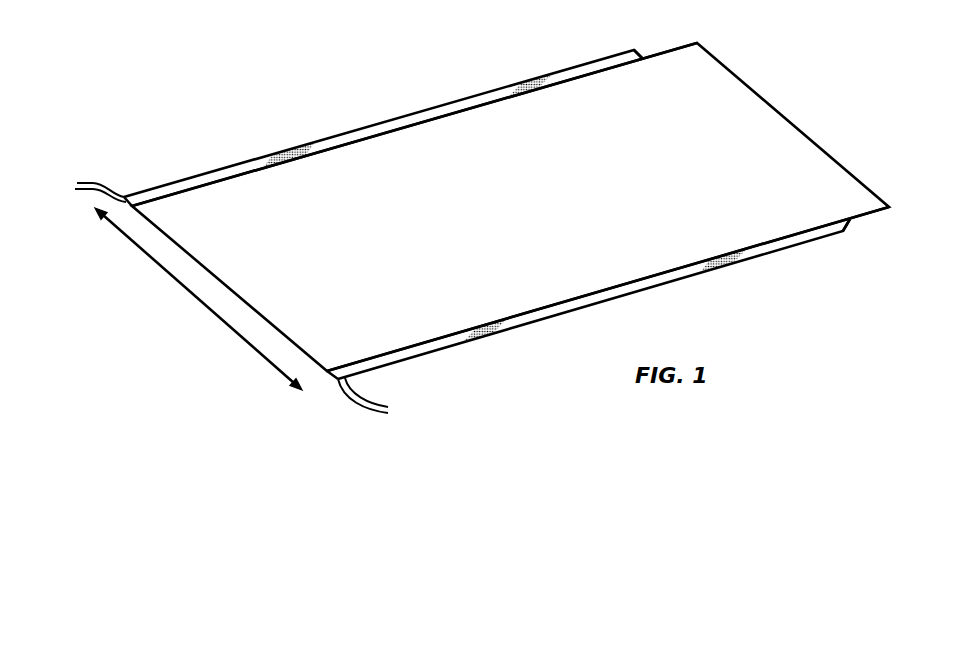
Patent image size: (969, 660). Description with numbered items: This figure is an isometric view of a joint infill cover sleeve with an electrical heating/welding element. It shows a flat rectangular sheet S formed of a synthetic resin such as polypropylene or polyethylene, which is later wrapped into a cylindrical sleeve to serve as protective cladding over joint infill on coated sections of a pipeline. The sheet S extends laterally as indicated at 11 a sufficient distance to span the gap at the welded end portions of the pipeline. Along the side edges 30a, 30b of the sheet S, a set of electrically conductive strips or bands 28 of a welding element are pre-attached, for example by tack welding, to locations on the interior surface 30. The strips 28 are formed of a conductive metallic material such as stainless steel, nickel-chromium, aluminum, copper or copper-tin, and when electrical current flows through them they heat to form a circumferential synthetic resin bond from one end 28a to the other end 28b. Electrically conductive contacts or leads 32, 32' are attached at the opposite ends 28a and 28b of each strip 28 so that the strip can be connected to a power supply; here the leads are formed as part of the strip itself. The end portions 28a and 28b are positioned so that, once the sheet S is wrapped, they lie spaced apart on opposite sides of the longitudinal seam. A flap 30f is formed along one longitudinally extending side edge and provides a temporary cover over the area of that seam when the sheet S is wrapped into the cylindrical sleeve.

The lateral extent 11 is at (228, 323).
The electrically conductive strip 28 is at (580, 307).
The end portion of conductive strip 28a is at (114, 218).
The end portion of conductive strip 28b is at (643, 57).
The interior surface 30 is at (528, 225).
The side edge 30a is at (672, 283).
The side edge 30b is at (405, 116).
The flap 30f is at (797, 145).
The electrically conductive lead 32 is at (379, 403).
The electrically conductive lead 32' is at (82, 186).
The sheet S is at (550, 70).